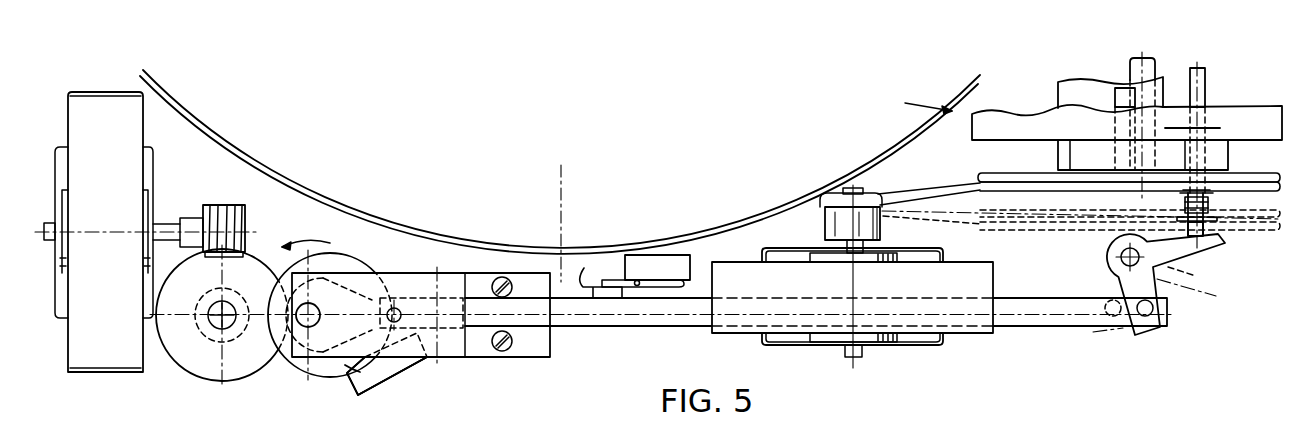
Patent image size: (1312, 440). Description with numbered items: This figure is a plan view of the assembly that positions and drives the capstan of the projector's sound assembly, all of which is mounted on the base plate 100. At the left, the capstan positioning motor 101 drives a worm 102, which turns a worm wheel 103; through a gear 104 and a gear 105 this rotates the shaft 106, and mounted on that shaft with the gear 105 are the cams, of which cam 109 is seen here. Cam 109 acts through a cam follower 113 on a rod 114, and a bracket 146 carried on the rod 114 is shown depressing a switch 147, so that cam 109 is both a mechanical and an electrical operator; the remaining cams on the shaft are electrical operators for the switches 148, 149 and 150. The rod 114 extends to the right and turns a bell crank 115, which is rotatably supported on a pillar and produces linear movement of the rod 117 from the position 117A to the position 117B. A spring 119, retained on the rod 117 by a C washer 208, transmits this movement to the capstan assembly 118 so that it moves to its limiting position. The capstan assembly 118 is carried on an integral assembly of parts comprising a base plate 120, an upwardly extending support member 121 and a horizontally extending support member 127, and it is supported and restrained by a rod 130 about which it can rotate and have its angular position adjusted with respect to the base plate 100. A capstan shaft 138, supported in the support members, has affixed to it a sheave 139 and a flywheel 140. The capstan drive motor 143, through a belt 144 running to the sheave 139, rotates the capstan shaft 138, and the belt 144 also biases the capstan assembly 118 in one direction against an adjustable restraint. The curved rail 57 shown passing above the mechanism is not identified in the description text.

The guide rail 57 is at (360, 212).
The base plate 100 is at (561, 391).
The capstan positioning motor 101 is at (93, 363).
The worm 102 is at (236, 207).
The worm wheel 103 is at (188, 361).
The gear 104 is at (233, 342).
The gear 105 is at (290, 379).
The shaft 106 is at (318, 302).
The cam 109 is at (337, 378).
The cam follower 113 is at (423, 271).
The rod 114 is at (606, 319).
The bell crank 115 is at (1158, 328).
The rod 117 is at (1206, 94).
The position of rod 117 117A is at (1213, 276).
The position of rod 117 117B is at (1218, 237).
The capstan assembly 118 is at (912, 104).
The spring 119 is at (1215, 203).
The base plate 120 is at (1077, 83).
The support member 121 is at (1098, 124).
The support member 127 is at (1213, 130).
The rod 130 is at (1152, 59).
The capstan shaft 138 is at (1117, 100).
The sheave 139 is at (980, 177).
The flywheel 140 is at (982, 113).
The capstan drive motor 143 is at (982, 279).
The belt 144 is at (897, 197).
The bracket 146 is at (587, 268).
The switch 147 is at (641, 262).
The switch 148 is at (378, 389).
The switch 149 is at (387, 376).
The switch 150 is at (387, 376).
The C washer 208 is at (1218, 222).